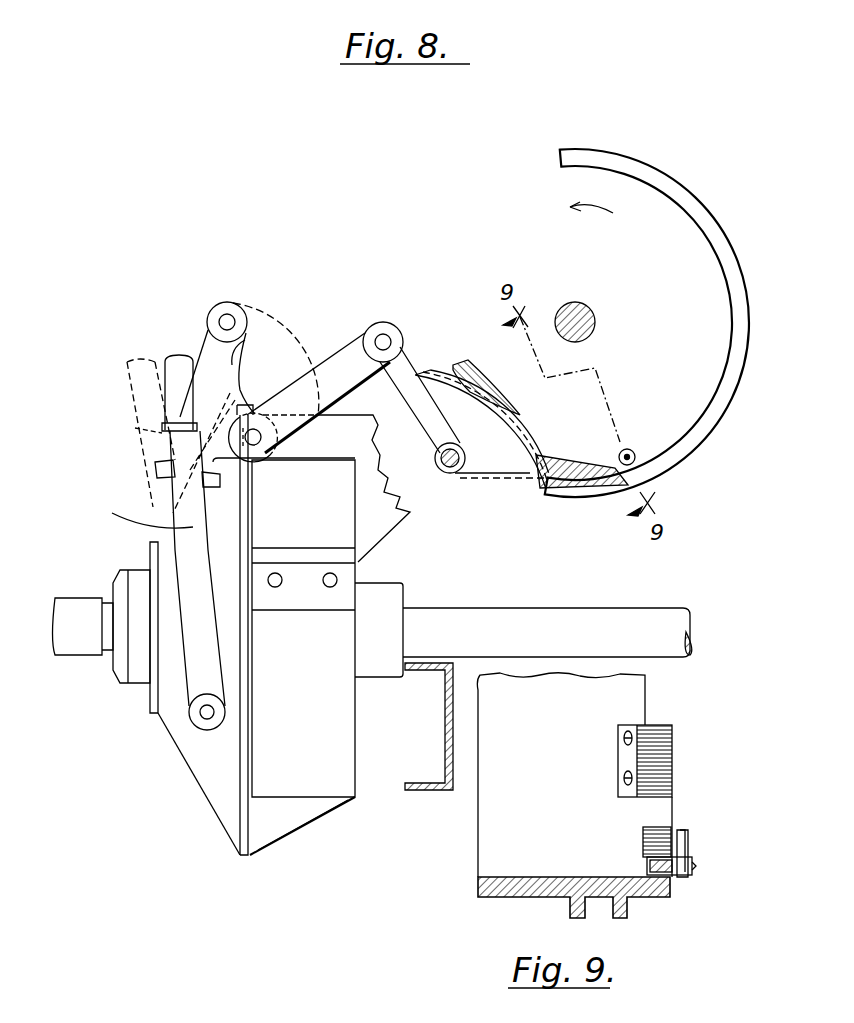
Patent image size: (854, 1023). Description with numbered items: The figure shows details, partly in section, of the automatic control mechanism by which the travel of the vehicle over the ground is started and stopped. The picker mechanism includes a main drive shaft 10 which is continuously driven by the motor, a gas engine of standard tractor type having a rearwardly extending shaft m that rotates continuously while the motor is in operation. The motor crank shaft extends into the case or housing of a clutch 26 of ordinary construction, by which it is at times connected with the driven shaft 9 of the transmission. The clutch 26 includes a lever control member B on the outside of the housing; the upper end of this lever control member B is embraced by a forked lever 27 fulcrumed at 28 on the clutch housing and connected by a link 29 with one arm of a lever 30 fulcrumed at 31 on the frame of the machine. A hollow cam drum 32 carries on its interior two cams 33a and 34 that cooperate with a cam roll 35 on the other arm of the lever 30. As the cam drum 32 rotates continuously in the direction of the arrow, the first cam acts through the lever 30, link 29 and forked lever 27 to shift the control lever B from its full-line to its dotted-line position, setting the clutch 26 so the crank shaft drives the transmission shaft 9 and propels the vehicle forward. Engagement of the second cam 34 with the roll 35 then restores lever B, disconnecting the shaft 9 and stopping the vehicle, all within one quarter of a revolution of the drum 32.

In FIG. 8, the main drive shaft 10 is at (597, 322).
In FIG. 8, the clutch 26 is at (293, 705).
In FIG. 8, the forked lever 27 is at (213, 360).
In FIG. 8, the fulcrum 28 is at (229, 320).
In FIG. 8, the link 29 is at (325, 362).
In FIG. 8, the lever 30 is at (405, 365).
In FIG. 9, the lever 30 is at (700, 835).
In FIG. 8, the fulcrum 31 is at (453, 467).
In FIG. 8, the cam drum 32 is at (712, 420).
In FIG. 9, the cam drum 32 is at (633, 888).
In FIG. 8, the cam 33a is at (568, 486).
In FIG. 9, the cam 33a is at (653, 845).
In FIG. 8, the cam 34 is at (490, 390).
In FIG. 9, the cam 34 is at (663, 765).
In FIG. 8, the cam roll 35 is at (633, 449).
In FIG. 9, the cam roll 35 is at (693, 865).
In FIG. 8, the driven shaft 9 is at (110, 645).
In FIG. 8, the lever control member B is at (136, 509).
In FIG. 8, the shaft m is at (686, 620).